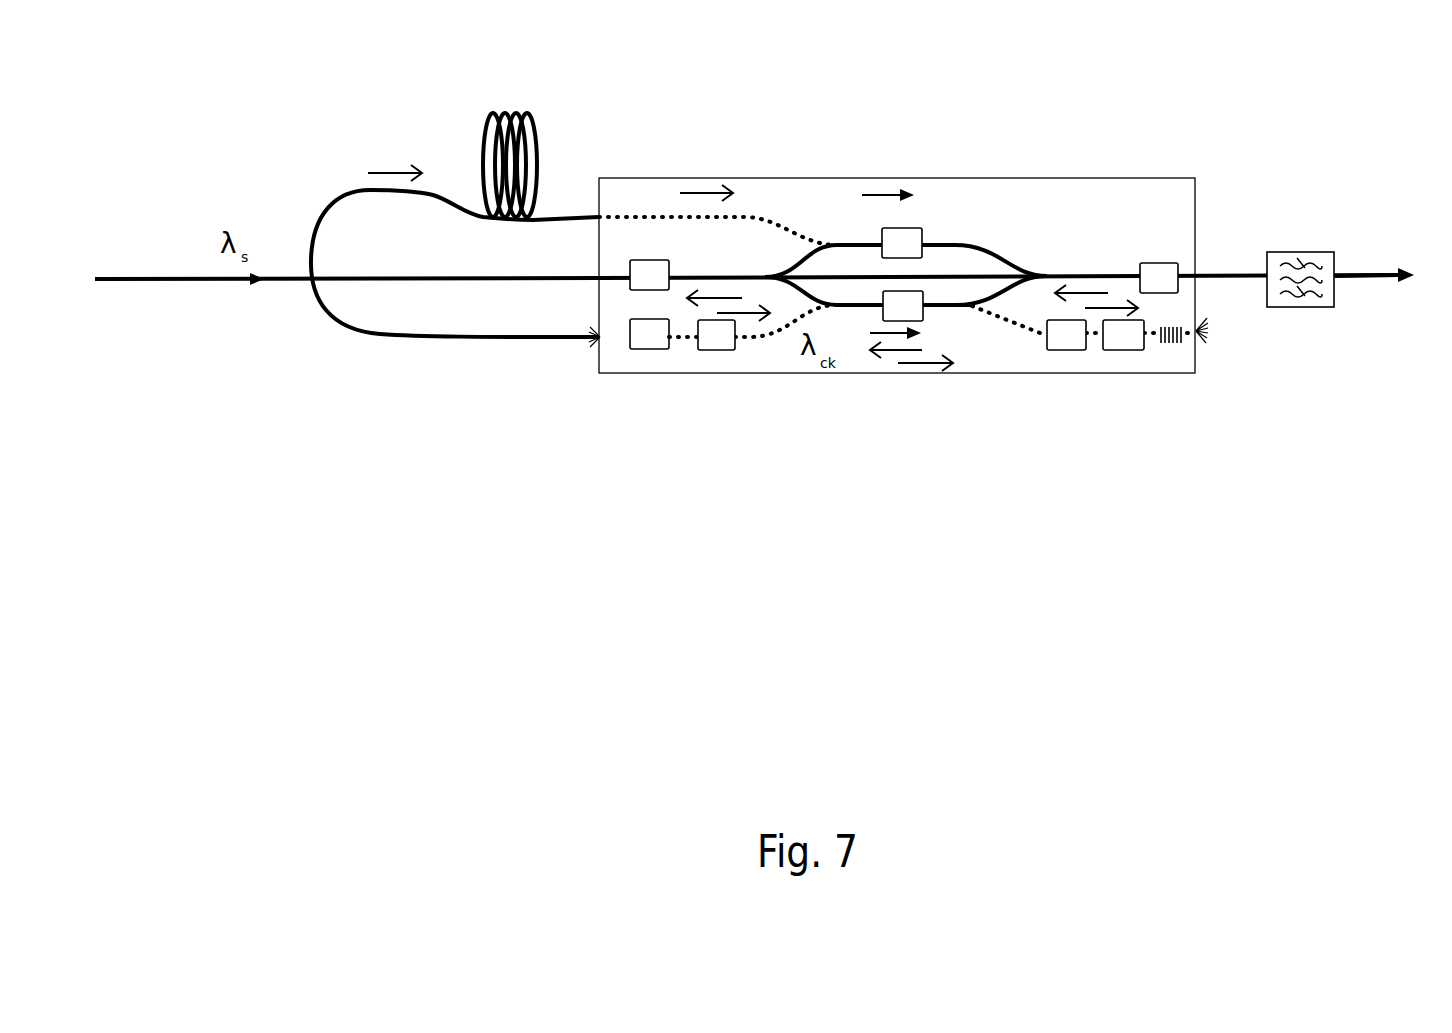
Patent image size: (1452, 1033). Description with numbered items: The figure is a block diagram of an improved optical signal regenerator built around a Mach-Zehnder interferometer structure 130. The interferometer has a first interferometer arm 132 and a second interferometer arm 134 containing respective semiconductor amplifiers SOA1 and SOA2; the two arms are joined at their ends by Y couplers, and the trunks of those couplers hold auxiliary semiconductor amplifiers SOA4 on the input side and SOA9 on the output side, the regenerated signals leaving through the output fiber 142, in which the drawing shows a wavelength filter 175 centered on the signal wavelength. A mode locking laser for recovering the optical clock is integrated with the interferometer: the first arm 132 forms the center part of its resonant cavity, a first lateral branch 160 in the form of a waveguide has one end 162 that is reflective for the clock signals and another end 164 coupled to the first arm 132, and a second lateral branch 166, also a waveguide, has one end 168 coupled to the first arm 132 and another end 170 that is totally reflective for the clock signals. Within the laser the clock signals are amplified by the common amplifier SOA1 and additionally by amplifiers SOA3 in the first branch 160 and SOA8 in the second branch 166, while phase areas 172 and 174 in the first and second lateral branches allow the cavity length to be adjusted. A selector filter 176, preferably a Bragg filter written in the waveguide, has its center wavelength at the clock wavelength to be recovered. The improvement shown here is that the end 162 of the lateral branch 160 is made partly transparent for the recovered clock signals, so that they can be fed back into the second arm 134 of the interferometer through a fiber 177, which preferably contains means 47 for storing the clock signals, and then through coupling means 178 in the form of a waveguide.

The means for storing clock signals 47 is at (487, 122).
The Mach-Zehnder interferometer structure 130 is at (820, 160).
The first interferometer arm 132 is at (953, 306).
The second interferometer arm 134 is at (952, 243).
The output fiber 142 is at (1360, 272).
The first lateral branch 160 is at (738, 336).
The end of first lateral branch 162 is at (595, 347).
The other end of first lateral branch 164 is at (847, 329).
The second lateral branch 166 is at (1013, 323).
The end of second lateral branch 168 is at (978, 307).
The other end of second lateral branch 170 is at (1207, 330).
The phase area 172 is at (718, 352).
The phase area 174 is at (1067, 350).
The optical bandpass filter 175 is at (1335, 295).
The selector filter 176 is at (1181, 337).
The fiber 177 is at (420, 335).
The coupling means 178 is at (683, 217).
The semiconductor amplifier SOA1 is at (882, 290).
The semiconductor amplifier SOA2 is at (918, 228).
The additional amplifier SOA3 is at (647, 350).
The auxiliary semiconductor amplifier SOA4 is at (647, 260).
The additional amplifier SOA8 is at (1138, 350).
The auxiliary semiconductor amplifier SOA9 is at (1167, 260).